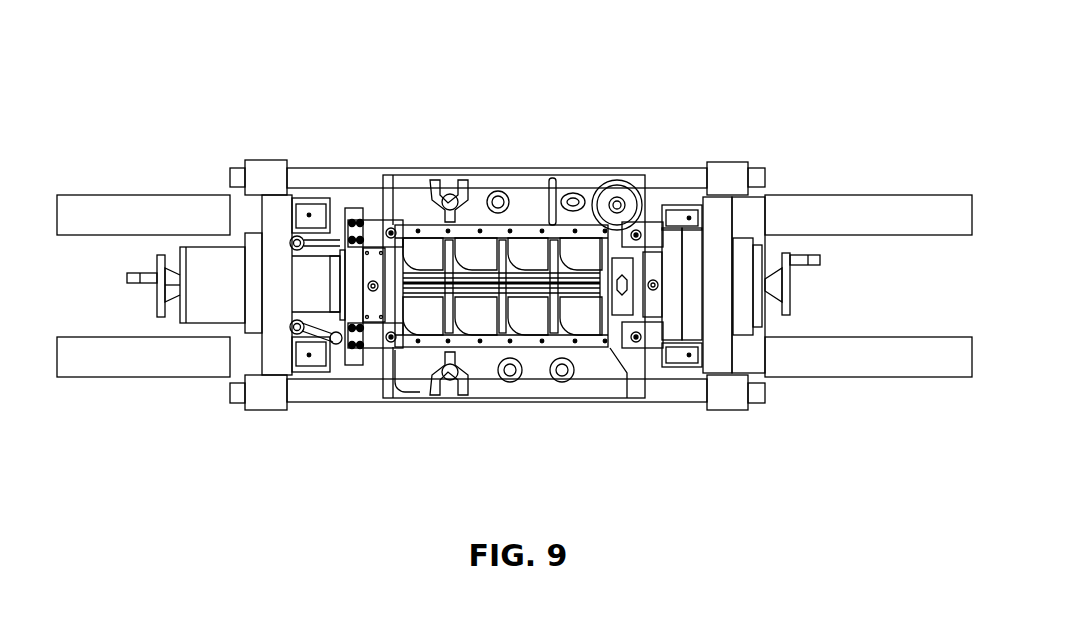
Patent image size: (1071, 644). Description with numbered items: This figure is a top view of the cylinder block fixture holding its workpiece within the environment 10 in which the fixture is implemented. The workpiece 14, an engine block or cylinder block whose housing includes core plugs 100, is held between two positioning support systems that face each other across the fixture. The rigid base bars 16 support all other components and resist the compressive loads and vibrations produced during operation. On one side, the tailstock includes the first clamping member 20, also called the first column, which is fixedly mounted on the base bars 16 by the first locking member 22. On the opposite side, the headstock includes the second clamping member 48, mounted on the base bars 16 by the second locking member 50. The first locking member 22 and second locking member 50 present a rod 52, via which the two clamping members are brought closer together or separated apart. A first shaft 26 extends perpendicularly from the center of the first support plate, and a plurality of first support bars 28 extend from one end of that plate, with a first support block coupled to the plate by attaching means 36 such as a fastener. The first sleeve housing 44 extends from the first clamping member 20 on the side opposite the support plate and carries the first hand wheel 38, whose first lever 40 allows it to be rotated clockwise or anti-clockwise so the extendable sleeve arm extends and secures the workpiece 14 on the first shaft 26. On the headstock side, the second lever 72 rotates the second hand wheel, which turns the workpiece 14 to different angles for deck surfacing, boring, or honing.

The environment 10 is at (323, 100).
The workpiece 14 is at (520, 190).
The base bars 16 is at (142, 360).
The first clamping member 20 is at (277, 270).
The first locking member 22 is at (273, 165).
The first shaft 26 is at (375, 338).
The first support bars 28 is at (378, 228).
The attaching means 36 is at (748, 310).
The first hand wheel 38 is at (160, 255).
The first lever 40 is at (136, 273).
The first sleeve housing 44 is at (205, 305).
The second clamping member 48 is at (715, 257).
The second locking member 50 is at (738, 176).
The rod 52 is at (327, 392).
The second lever 72 is at (813, 258).
The core plugs 100 is at (512, 385).